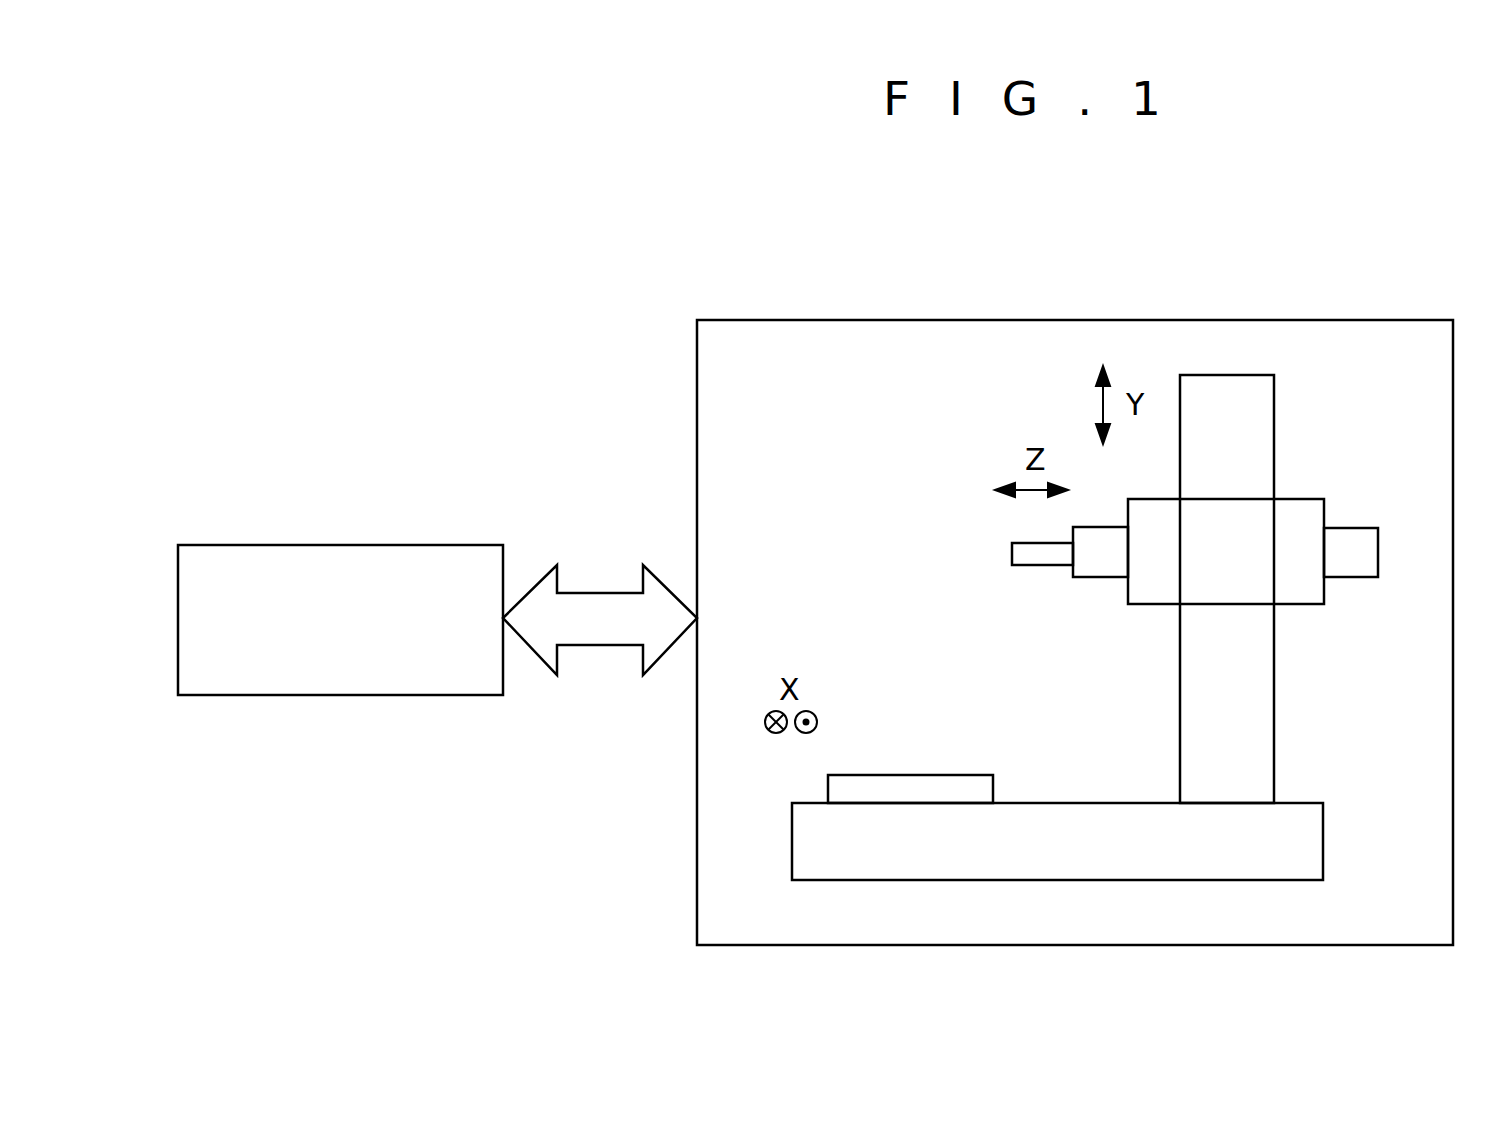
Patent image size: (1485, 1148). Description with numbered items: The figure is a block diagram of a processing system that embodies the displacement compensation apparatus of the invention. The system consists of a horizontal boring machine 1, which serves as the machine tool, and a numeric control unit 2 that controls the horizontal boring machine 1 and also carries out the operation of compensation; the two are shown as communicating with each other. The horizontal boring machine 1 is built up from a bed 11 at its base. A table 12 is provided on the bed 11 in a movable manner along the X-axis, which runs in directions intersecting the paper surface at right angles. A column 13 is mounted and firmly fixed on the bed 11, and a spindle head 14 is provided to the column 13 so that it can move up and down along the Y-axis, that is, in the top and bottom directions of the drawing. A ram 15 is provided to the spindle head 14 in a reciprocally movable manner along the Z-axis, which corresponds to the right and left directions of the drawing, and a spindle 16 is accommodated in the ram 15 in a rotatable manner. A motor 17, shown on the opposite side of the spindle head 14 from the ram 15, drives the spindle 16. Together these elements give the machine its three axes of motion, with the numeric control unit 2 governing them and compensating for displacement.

The horizontal boring machine 1 is at (858, 320).
The numeric control unit 2 is at (330, 545).
The bed 11 is at (1308, 838).
The table 12 is at (912, 778).
The column 13 is at (1253, 715).
The spindle head 14 is at (1305, 499).
The ram 15 is at (1103, 577).
The spindle 16 is at (1035, 565).
The motor 17 is at (1357, 577).